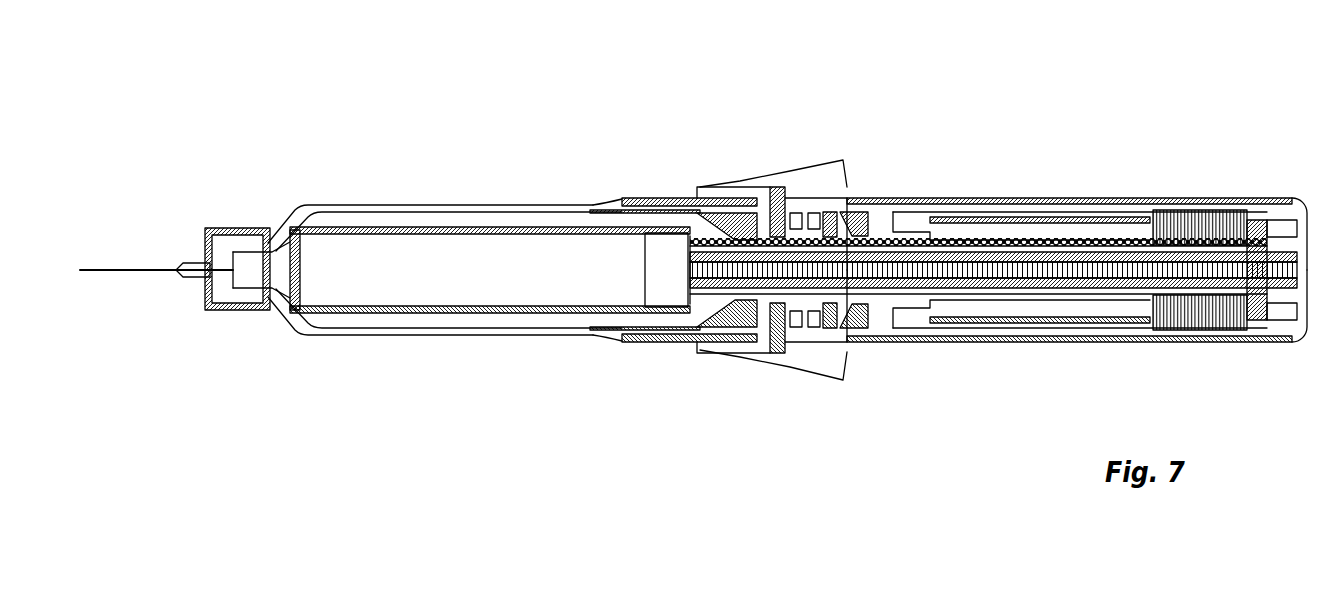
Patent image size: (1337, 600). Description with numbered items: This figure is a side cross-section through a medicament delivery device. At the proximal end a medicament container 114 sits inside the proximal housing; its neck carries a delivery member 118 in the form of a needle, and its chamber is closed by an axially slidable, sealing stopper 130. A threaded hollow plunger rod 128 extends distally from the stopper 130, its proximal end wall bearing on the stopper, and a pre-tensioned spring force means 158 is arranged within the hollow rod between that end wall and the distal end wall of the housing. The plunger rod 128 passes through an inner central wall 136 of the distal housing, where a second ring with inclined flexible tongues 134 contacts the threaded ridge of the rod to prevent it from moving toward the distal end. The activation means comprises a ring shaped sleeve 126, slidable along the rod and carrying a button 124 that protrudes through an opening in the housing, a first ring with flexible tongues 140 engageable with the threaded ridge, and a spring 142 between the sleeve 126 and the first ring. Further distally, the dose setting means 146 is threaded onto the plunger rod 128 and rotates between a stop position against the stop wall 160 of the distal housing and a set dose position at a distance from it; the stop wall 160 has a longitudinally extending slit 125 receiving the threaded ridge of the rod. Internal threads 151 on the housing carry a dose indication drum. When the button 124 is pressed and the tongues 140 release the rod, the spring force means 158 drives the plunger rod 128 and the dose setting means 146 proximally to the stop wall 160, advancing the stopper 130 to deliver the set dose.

The medicament container 114 is at (383, 283).
The delivery member 118 is at (130, 268).
The button 124 is at (837, 176).
The longitudinally extending slit 125 is at (893, 217).
The ring shaped sleeve 126 is at (810, 303).
The threaded hollow plunger rod 128 is at (1027, 247).
The stopper 130 is at (673, 257).
The inclined flexible tongues 134 is at (730, 303).
The inner central wall 136 is at (765, 185).
The flexible tongues 140 is at (865, 230).
The spring 142 is at (1250, 230).
The dose setting means 146 is at (913, 313).
The internal threads 151 is at (1233, 327).
The spring force means 158 is at (1117, 253).
The stop wall 160 is at (880, 313).